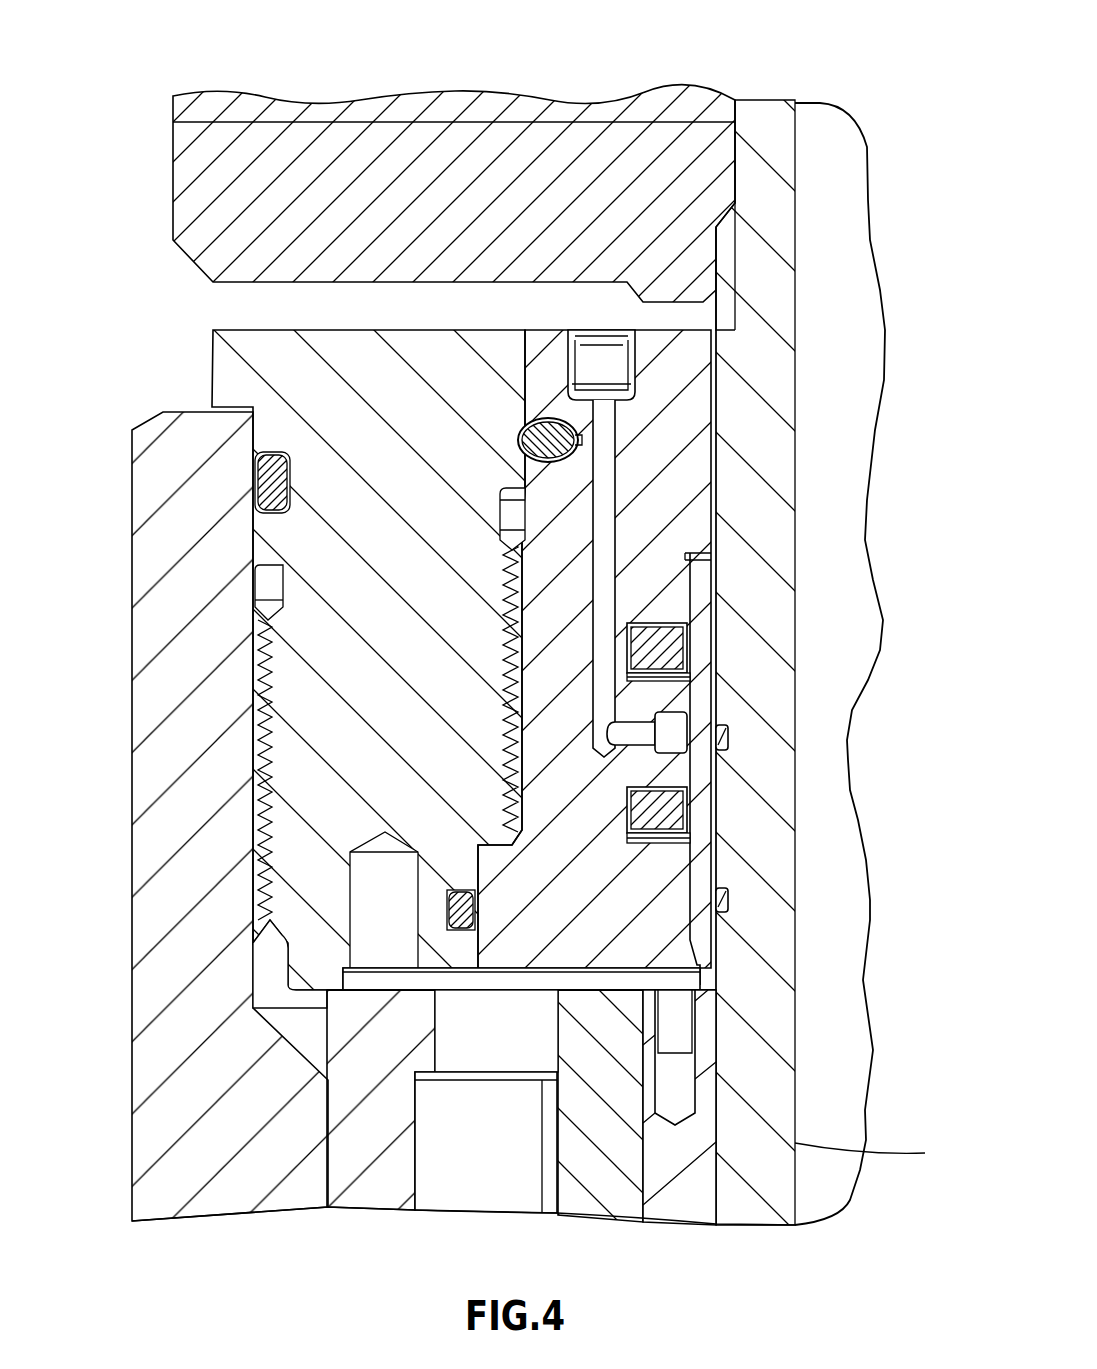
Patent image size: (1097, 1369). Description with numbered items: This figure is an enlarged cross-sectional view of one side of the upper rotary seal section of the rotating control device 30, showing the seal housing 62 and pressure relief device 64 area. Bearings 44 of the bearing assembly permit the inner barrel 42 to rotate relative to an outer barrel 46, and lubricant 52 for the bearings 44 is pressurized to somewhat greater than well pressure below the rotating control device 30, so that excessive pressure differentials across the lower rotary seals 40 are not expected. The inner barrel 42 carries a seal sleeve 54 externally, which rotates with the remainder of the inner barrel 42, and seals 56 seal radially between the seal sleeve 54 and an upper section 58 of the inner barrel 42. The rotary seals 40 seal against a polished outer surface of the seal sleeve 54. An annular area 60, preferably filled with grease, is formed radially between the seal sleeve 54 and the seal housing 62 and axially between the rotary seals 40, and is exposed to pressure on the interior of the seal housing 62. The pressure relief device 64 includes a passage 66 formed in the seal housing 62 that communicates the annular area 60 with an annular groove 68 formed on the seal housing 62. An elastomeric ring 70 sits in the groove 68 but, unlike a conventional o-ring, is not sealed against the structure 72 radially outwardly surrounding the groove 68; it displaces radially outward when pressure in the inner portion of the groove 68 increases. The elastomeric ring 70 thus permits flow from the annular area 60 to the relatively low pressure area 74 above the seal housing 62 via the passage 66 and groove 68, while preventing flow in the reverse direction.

The rotating control device 30 is at (868, 82).
The rotary seals 40 is at (690, 630).
The inner barrel 42 is at (877, 1154).
The bearings 44 is at (415, 1170).
The outer barrel 46 is at (132, 1105).
The lubricant 52 is at (522, 1048).
The seal sleeve 54 is at (718, 932).
The seals 56 is at (732, 738).
The upper section 58 is at (795, 352).
The annular area 60 is at (680, 720).
The seal housing 62 is at (722, 320).
The pressure relief device 64 is at (672, 443).
The passage 66 is at (606, 515).
The annular groove 68 is at (525, 450).
The elastomeric ring 70 is at (525, 430).
The structure 72 is at (212, 360).
The relatively low pressure area 74 is at (396, 315).